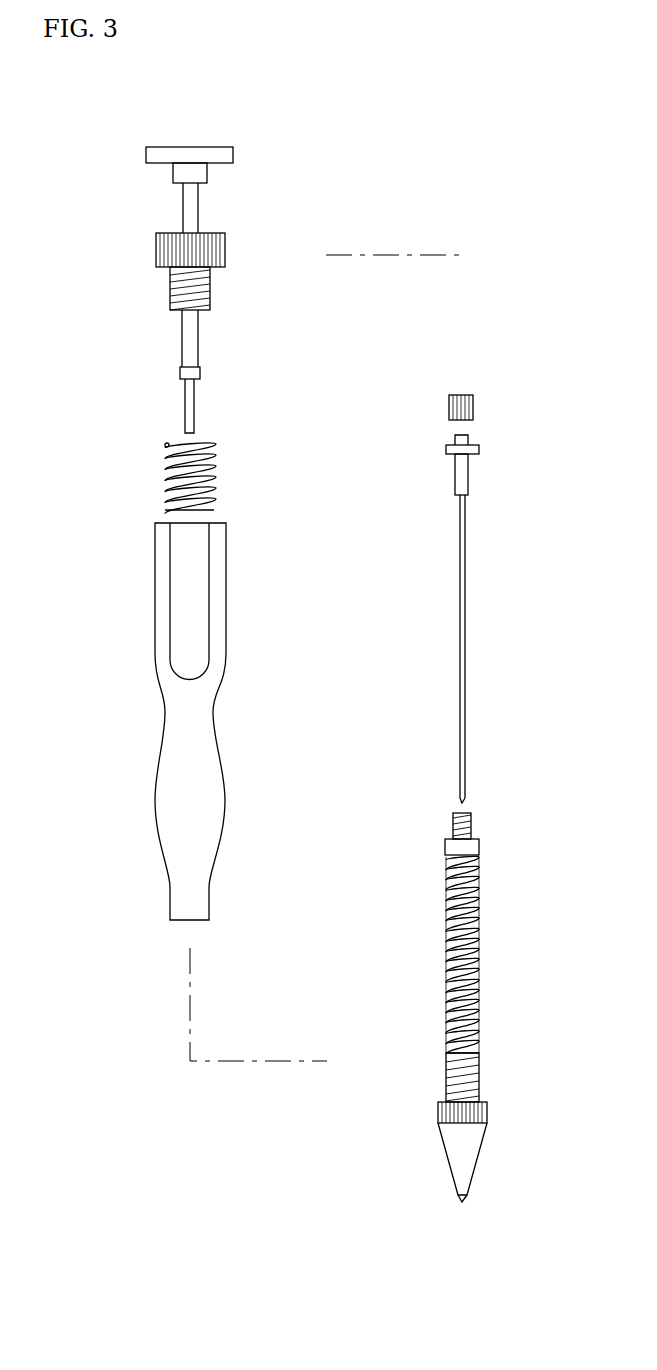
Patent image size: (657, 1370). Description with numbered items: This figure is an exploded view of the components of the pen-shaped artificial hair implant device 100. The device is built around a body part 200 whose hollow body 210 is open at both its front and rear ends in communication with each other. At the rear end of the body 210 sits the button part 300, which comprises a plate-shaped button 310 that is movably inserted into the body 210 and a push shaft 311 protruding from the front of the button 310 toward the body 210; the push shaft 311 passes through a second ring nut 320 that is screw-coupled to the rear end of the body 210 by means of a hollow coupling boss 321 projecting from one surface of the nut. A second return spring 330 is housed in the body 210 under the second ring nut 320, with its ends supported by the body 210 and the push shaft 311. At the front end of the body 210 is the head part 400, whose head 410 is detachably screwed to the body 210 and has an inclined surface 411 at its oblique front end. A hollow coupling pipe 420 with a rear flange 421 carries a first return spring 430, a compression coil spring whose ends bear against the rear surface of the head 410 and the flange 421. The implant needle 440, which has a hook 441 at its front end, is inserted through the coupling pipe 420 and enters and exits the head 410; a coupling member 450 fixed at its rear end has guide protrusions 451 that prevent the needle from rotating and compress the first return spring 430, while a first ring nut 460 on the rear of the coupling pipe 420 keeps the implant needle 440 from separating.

The artificial hair implant device 100 is at (497, 170).
The body part 200 is at (123, 918).
The body 210 is at (205, 718).
The button part 300 is at (123, 503).
The button 310 is at (230, 155).
The push shaft 311 is at (192, 342).
The second ring nut 320 is at (222, 247).
The coupling boss 321 is at (208, 291).
The second return spring 330 is at (208, 470).
The head part 400 is at (418, 1192).
The head 410 is at (472, 1148).
The inclined surface 411 is at (464, 1201).
The coupling pipe 420 is at (476, 902).
The flange 421 is at (476, 844).
The first return spring 430 is at (479, 957).
The implant needle 440 is at (465, 628).
The hook 441 is at (464, 802).
The coupling member 450 is at (466, 480).
The guide protrusion 451 is at (478, 448).
The first ring nut 460 is at (470, 407).